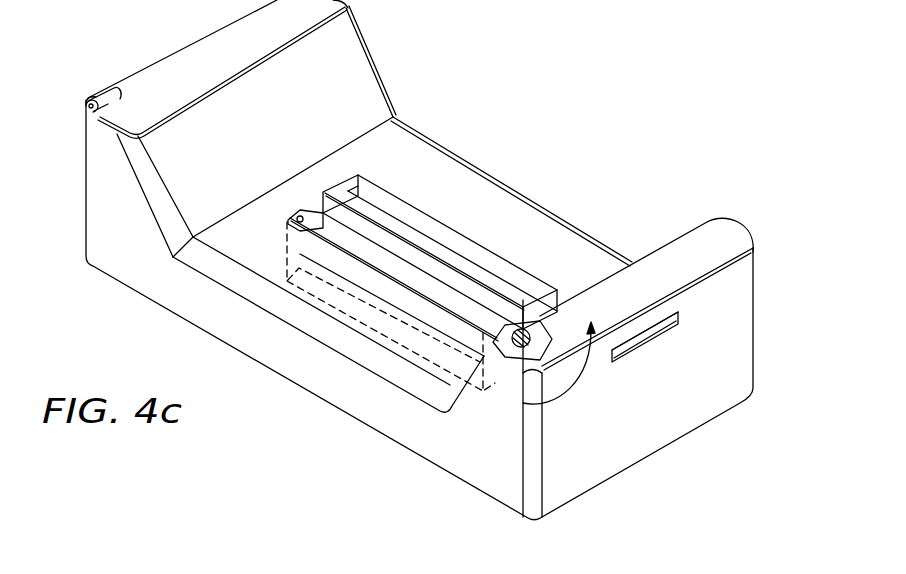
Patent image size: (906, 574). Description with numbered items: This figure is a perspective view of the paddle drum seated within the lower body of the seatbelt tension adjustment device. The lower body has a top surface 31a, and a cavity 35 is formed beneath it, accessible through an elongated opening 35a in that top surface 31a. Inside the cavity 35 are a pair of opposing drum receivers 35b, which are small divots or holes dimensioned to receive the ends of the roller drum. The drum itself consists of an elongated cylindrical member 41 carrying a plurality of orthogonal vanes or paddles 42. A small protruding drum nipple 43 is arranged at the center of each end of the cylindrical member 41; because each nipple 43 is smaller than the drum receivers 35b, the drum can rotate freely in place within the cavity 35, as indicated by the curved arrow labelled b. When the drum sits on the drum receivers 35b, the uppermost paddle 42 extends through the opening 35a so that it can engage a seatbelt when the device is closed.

The top surface 31a is at (523, 217).
The cavity 35 is at (450, 233).
The elongated opening 35a is at (382, 200).
The drum receivers 35b is at (304, 208).
The elongated cylindrical member 41 is at (487, 312).
The paddles 42 is at (335, 206).
The drum nipple 43 is at (311, 212).